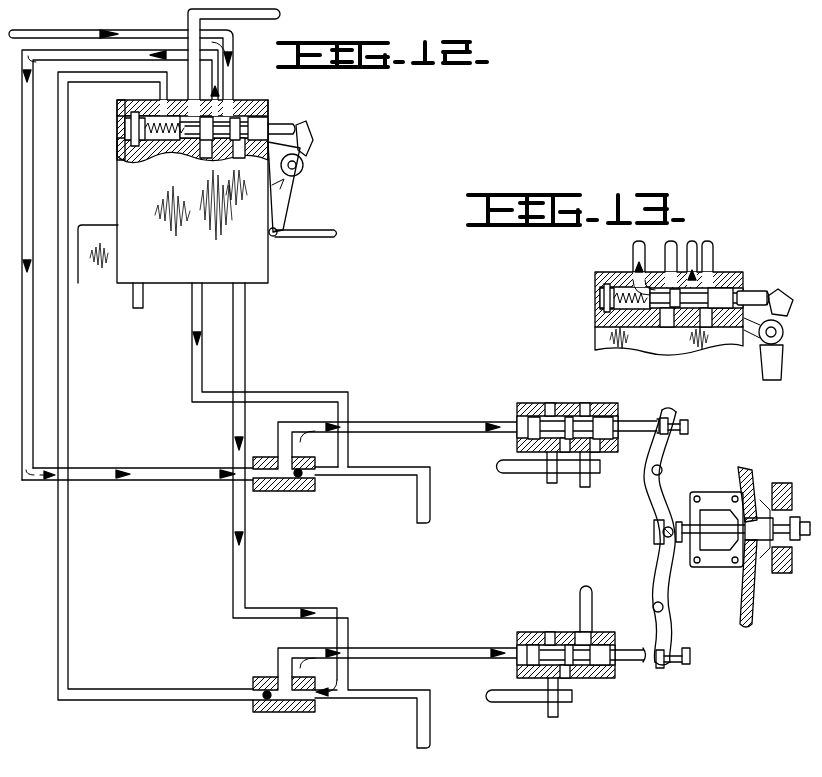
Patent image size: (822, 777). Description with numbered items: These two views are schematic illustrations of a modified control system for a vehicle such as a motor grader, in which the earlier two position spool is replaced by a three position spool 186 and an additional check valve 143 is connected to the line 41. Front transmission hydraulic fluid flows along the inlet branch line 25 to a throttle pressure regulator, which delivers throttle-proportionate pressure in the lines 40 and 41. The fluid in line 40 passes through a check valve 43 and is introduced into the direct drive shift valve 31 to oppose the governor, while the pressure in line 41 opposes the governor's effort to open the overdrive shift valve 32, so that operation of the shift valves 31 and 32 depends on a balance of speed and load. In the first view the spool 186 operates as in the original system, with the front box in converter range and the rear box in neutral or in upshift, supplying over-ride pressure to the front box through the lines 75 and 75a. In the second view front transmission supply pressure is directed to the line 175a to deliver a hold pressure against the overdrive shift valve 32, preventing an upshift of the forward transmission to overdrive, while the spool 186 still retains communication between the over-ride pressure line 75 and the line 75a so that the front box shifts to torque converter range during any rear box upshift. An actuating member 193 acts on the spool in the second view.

In FIG. 12, the over-ride pressure line 75 is at (48, 31).
In FIG. 13, the over-ride pressure line 75 is at (714, 256).
In FIG. 12, the inlet branch line 25 is at (198, 16).
In FIG. 13, the inlet branch line 25 is at (673, 243).
In FIG. 12, the three position spool 186 is at (278, 109).
In FIG. 13, the three position spool 186 is at (727, 308).
In FIG. 12, the line 40 is at (310, 393).
In FIG. 12, the line 75a is at (88, 472).
In FIG. 13, the line 75a is at (695, 243).
In FIG. 12, the check valve 43 is at (277, 492).
In FIG. 12, the line 175a is at (66, 541).
In FIG. 13, the line 175a is at (633, 248).
In FIG. 12, the line 41 is at (247, 581).
In FIG. 12, the check valve 143 is at (293, 712).
In FIG. 12, the direct drive shift valve 31 is at (545, 405).
In FIG. 12, the overdrive shift valve 32 is at (545, 632).
In FIG. 13, the lever 193 is at (782, 312).